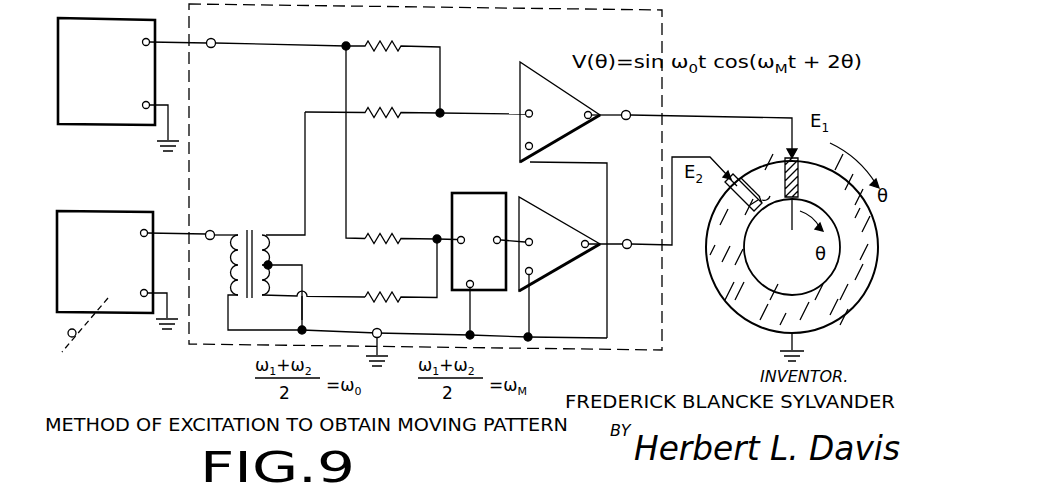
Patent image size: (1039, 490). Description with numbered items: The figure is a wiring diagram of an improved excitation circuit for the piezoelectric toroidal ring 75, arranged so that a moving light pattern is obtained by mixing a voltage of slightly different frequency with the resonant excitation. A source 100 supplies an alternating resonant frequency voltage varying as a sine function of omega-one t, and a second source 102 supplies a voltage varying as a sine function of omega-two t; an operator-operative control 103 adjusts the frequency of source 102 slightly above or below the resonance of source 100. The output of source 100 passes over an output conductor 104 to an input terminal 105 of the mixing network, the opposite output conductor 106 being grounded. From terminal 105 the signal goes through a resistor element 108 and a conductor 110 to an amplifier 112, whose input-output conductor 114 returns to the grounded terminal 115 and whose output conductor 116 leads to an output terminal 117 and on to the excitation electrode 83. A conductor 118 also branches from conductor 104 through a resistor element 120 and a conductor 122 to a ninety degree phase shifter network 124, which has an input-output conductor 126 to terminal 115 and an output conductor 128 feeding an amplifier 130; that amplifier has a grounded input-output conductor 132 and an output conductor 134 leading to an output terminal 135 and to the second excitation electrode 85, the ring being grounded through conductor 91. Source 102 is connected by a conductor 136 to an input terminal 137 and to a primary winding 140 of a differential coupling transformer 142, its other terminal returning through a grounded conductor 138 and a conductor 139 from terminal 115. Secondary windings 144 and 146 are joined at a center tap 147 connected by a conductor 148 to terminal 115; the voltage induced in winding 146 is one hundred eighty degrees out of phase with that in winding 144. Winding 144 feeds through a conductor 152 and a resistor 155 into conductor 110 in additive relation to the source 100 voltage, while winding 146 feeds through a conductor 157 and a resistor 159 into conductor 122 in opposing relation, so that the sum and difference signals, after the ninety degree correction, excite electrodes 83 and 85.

The toroidal ring 75 is at (713, 293).
The excitation electrode 83 is at (785, 162).
The second excitation electrode 85 is at (771, 198).
The conductor 91 is at (796, 346).
The source of alternating resonant frequency voltage 100 is at (116, 0).
The source of alternating voltage 102 is at (110, 208).
The operator-operative control 103 is at (75, 332).
The output conductor 104 is at (175, 35).
The input terminal 105 is at (218, 27).
The opposite output conductor 106 is at (164, 125).
The resistor element 108 is at (386, 46).
The conductor 110 is at (446, 113).
The amplifier 112 is at (557, 46).
The input-output conductor 114 is at (581, 164).
The grounded terminal 115 is at (395, 316).
The output conductor 116 is at (699, 116).
The output terminal 117 is at (628, 111).
The conductor 118 is at (360, 128).
The resistor element 120 is at (386, 238).
The conductor 122 is at (438, 239).
The ninety degree phase shifter network 124 is at (462, 193).
The input-output conductor 126 is at (469, 296).
The output conductor 128 is at (513, 243).
The amplifier 130 is at (553, 216).
The grounded input-output conductor 132 is at (537, 300).
The output conductor 134 is at (647, 243).
The output terminal 135 is at (633, 249).
The conductor 136 is at (174, 232).
The input terminal 137 is at (226, 215).
The grounded conductor 138 is at (160, 316).
The conductor 139 is at (230, 319).
The primary winding 140 is at (230, 262).
The differential coupling transformer 142 is at (250, 232).
The secondary winding 144 is at (275, 246).
The secondary winding 146 is at (283, 295).
The center tap 147 is at (273, 266).
The conductor 148 is at (295, 328).
The conductor 152 is at (314, 108).
The resistor 155 is at (402, 108).
The conductor 157 is at (320, 304).
The resistor 159 is at (375, 290).